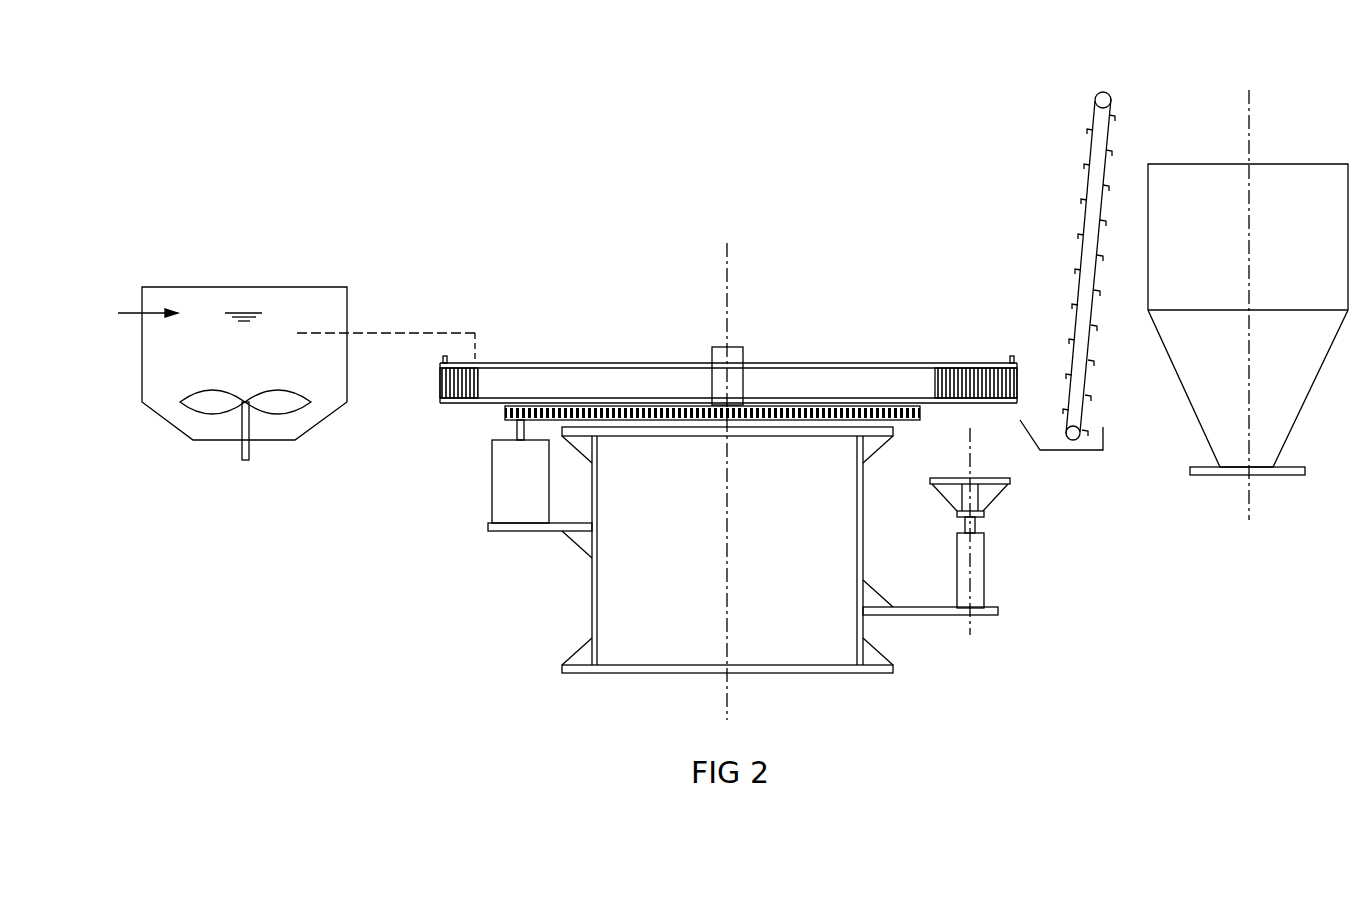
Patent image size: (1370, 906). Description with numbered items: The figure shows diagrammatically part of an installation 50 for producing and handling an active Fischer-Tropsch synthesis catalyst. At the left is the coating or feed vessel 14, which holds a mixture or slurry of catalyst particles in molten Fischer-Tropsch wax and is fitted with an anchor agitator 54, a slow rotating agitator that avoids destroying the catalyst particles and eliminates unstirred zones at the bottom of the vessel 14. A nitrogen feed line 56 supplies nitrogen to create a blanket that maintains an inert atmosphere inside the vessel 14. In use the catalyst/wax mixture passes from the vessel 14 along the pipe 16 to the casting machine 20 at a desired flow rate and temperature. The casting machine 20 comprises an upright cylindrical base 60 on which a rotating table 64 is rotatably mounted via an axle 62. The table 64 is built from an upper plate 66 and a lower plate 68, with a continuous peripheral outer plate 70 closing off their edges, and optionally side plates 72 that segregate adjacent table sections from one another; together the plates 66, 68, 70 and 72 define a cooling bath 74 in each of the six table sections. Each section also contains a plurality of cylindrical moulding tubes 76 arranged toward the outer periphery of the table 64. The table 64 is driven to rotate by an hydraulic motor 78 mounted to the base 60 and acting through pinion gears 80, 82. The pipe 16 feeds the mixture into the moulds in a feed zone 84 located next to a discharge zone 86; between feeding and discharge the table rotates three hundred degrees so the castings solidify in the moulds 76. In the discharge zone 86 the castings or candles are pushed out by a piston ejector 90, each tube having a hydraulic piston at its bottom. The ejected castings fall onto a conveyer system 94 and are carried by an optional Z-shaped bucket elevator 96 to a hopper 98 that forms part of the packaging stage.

The coating or feed vessel 14 is at (258, 298).
The pipe 16 is at (405, 332).
The casting machine 20 is at (717, 342).
The installation 50 is at (1136, 225).
The anchor agitator 54 is at (290, 398).
The nitrogen feed line 56 is at (134, 310).
The upright cylindrical base 60 is at (697, 565).
The axle 62 is at (744, 362).
The rotating table 64 is at (627, 343).
The upper plate 66 is at (488, 363).
The lower plate 68 is at (478, 402).
The outer plate 70 is at (812, 380).
The side plates 72 is at (665, 380).
The cooling bath 74 is at (536, 368).
The cylindrical moulding tubes 76 is at (468, 366).
The hydraulic motor 78 is at (490, 513).
The pinion gear 80 is at (505, 414).
The pinion gear 82 is at (598, 428).
The feed zone 84 is at (478, 298).
The discharge zone 86 is at (988, 320).
The piston ejector 90 is at (1013, 525).
The conveyer system 94 is at (1055, 452).
The Z-shaped bucket elevator 96 is at (1085, 318).
The hopper 98 is at (1306, 262).